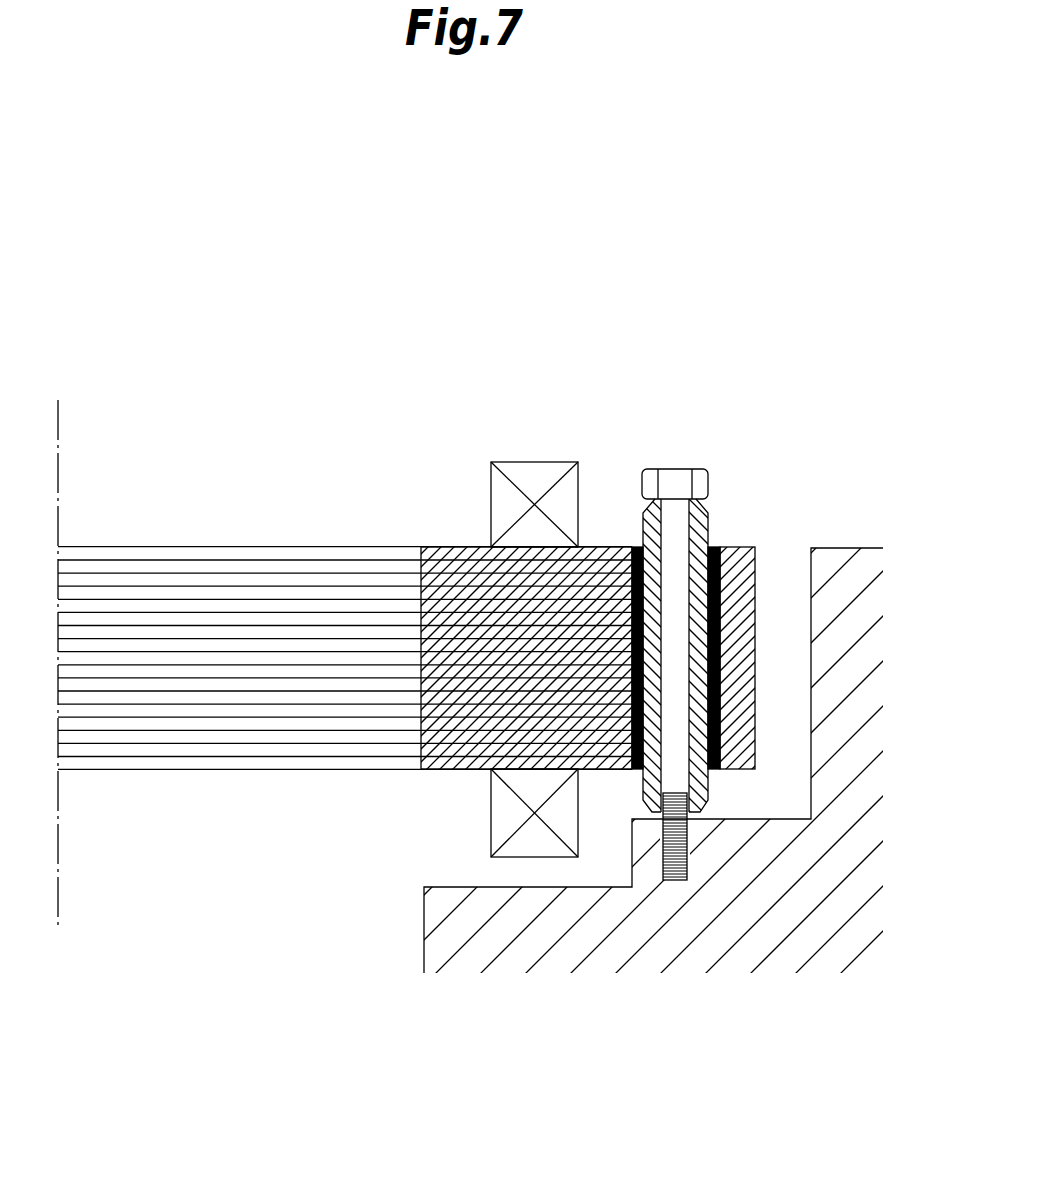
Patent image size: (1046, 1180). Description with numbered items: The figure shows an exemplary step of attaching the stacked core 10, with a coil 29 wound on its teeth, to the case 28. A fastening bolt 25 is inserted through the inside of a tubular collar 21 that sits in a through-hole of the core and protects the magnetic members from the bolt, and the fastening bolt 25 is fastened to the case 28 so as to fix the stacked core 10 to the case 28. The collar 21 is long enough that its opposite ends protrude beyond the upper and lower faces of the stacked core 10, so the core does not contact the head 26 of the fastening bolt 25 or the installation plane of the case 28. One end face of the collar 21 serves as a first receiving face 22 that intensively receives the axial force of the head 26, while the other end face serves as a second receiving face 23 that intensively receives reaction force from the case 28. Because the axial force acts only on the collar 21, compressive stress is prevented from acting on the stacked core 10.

The stacked core 10 is at (740, 522).
The collar 21 is at (708, 793).
The first receiving face 22 is at (656, 704).
The second receiving face 23 is at (662, 822).
The fastening bolt 25 is at (675, 540).
The head 26 is at (675, 475).
The case 28 is at (811, 614).
The coil 29 is at (507, 505).